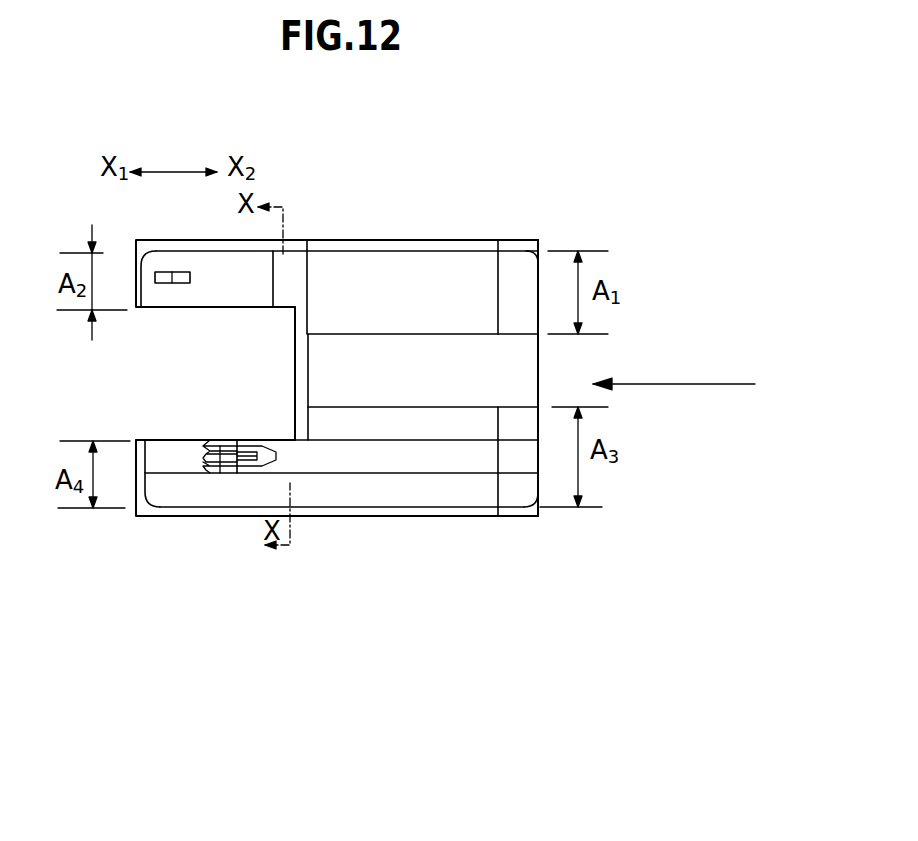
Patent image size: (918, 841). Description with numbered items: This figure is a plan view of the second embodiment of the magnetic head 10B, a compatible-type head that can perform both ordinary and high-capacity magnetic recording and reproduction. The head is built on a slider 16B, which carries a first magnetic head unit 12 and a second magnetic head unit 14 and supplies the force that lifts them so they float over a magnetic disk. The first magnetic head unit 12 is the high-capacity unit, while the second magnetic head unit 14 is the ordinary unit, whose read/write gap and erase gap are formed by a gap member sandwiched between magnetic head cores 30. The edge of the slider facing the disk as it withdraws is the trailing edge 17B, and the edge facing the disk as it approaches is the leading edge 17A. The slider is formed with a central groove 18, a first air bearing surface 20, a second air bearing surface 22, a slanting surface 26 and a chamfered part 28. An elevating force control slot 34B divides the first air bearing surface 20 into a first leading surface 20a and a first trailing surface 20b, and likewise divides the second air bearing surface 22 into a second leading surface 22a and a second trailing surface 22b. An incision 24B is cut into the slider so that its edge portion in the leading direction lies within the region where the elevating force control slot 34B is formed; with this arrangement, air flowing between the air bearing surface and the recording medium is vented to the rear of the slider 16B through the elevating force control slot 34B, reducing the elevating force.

The magnetic head 10B is at (515, 144).
The first magnetic head unit 12 is at (170, 270).
The second magnetic head unit 14 is at (246, 474).
The slider 16B is at (463, 234).
The leading edge 17A is at (540, 292).
The trailing edge 17B is at (130, 287).
The central groove 18 is at (365, 367).
The first air bearing surface 20 is at (339, 275).
The first leading surface 20a is at (358, 258).
The first trailing surface 20b is at (203, 287).
The second air bearing surface 22 is at (337, 522).
The second leading surface 22a is at (385, 422).
The second trailing surface 22b is at (213, 492).
The incision 24B is at (170, 383).
The slanting surface 26 is at (505, 262).
The chamfered part 28 is at (208, 243).
The magnetic head cores 30 is at (478, 457).
The elevating force control slot 34B is at (302, 415).